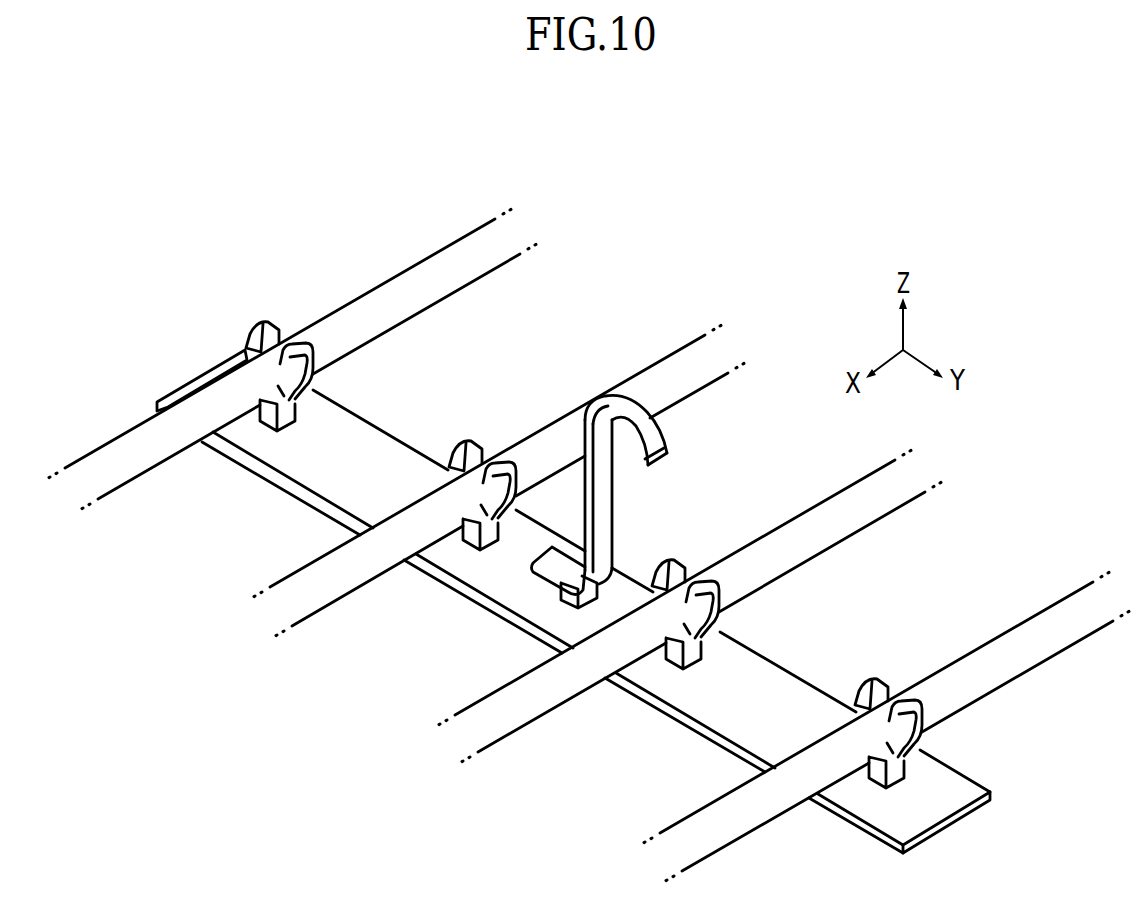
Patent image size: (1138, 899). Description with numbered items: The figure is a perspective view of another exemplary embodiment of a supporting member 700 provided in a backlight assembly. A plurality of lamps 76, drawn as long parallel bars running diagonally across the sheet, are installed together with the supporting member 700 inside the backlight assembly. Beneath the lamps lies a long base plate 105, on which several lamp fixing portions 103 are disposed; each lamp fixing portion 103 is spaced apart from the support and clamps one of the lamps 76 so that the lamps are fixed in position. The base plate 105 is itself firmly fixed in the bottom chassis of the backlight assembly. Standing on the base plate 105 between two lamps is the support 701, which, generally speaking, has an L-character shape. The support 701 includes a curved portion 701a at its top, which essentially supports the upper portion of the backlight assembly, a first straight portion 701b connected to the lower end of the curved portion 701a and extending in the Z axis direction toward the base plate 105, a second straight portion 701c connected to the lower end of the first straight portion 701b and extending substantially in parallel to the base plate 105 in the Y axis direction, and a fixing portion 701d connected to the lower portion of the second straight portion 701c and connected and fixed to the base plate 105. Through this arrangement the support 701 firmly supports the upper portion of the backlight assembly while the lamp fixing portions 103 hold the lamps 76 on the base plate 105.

The supporting member 700 is at (668, 541).
The support 701 is at (585, 366).
The curved portion 701a is at (652, 436).
The first straight portion 701b is at (606, 522).
The second straight portion 701c is at (552, 564).
The fixing portion 701d is at (567, 597).
The lamps 76 is at (1049, 650).
The base plate 105 is at (945, 788).
The lamp fixing portion 103 is at (871, 773).